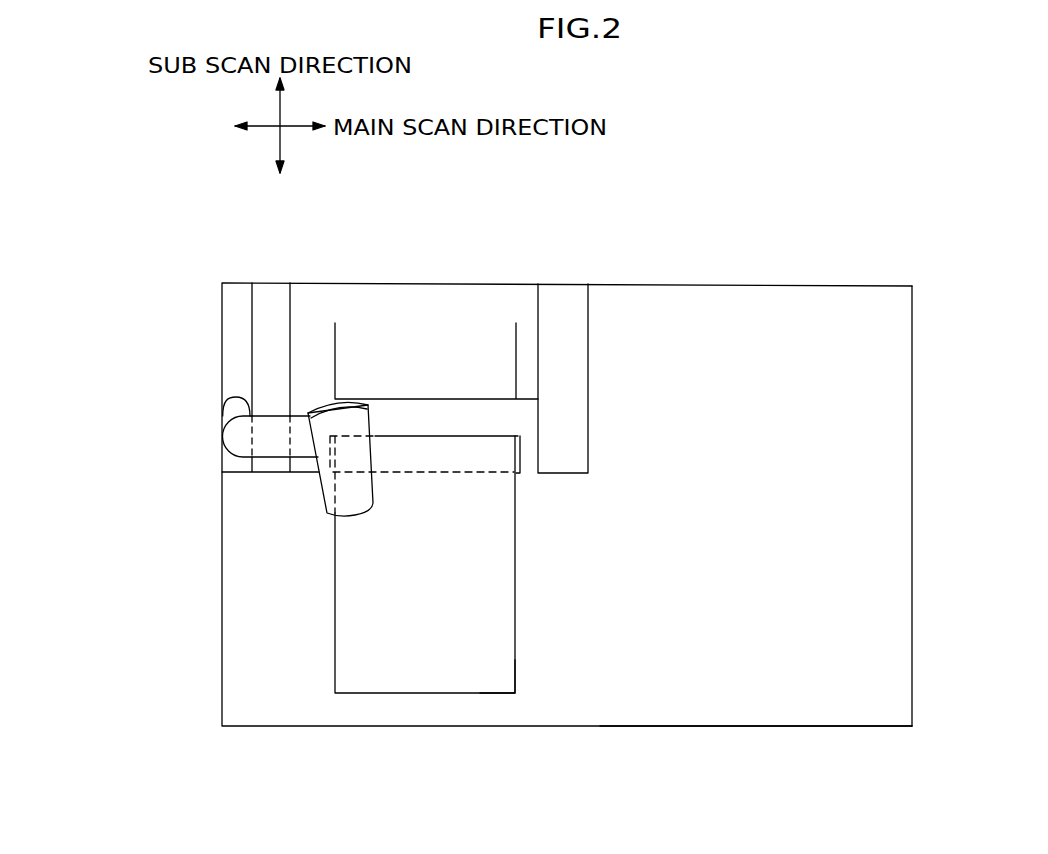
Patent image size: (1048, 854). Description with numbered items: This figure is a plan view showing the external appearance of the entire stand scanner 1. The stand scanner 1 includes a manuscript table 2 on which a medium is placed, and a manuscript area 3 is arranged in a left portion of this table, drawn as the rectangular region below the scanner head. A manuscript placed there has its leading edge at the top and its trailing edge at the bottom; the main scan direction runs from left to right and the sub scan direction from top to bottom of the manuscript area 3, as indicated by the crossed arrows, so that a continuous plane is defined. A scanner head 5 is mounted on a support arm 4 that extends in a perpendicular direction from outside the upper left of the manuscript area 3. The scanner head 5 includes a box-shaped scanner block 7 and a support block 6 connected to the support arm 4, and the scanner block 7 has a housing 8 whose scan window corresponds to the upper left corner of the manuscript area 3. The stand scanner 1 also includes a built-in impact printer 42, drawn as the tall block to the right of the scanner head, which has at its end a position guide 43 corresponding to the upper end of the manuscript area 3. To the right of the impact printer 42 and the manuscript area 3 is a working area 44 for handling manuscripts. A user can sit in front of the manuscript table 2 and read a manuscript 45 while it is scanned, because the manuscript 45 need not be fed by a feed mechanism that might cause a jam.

The stand scanner 1 is at (795, 218).
The manuscript table 2 is at (912, 517).
The manuscript area 3 is at (552, 632).
The support arm 4 is at (224, 456).
The scanner head 5 is at (305, 490).
The support block 6 is at (268, 427).
The scanner block 7 is at (328, 414).
The housing 8 is at (343, 398).
The impact printer 42 is at (588, 400).
The position guide 43 is at (417, 437).
The working area 44 is at (873, 610).
The manuscript 45 is at (514, 677).